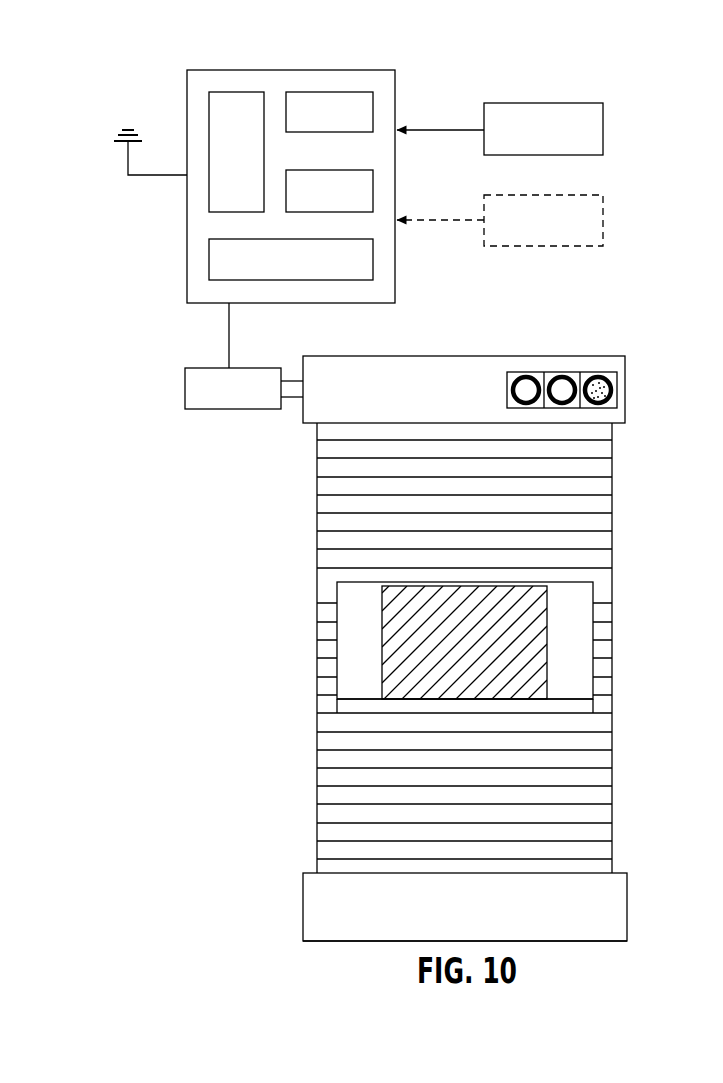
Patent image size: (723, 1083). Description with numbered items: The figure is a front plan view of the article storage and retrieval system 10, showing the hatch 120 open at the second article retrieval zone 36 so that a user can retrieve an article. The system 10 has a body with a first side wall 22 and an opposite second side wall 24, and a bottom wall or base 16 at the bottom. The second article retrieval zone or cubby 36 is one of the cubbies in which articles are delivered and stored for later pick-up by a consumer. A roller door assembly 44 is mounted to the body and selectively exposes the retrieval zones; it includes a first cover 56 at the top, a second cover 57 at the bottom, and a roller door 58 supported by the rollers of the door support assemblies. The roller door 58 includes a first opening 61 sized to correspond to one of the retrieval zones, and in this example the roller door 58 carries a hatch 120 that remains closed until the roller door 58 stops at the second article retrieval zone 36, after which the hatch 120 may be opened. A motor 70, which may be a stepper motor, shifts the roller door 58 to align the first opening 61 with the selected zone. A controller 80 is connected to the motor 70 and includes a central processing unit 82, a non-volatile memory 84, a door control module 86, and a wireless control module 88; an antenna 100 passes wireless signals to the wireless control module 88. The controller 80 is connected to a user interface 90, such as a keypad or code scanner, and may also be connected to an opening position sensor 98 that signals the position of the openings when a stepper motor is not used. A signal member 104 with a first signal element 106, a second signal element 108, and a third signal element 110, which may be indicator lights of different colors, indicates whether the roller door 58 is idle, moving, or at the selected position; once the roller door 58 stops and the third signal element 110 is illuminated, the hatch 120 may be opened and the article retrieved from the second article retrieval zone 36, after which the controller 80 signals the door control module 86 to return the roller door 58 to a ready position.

The article storage and retrieval system 10 is at (636, 526).
The bottom wall or base 16 is at (598, 942).
The first side wall 22 is at (316, 542).
The second side wall 24 is at (613, 557).
The second article retrieval zone or cubby 36 is at (560, 625).
The roller door assembly 44 is at (443, 352).
The first cover 56 is at (320, 388).
The second cover 57 is at (314, 908).
The roller door 58 is at (341, 762).
The first opening 61 is at (337, 607).
The motor 70 is at (231, 412).
The controller 80 is at (185, 227).
The central processing unit (CPU) 82 is at (250, 166).
The non-volatile memory 84 is at (343, 127).
The door control module 86 is at (343, 207).
The wireless control module 88 is at (304, 274).
The user interface 90 is at (603, 130).
The opening position sensor 98 is at (603, 213).
The antenna 100 is at (130, 155).
The signal member 104 is at (492, 399).
The first signal element 106 is at (521, 384).
The second signal element 108 is at (563, 384).
The third signal element 110 is at (613, 389).
The hatch 120 is at (348, 706).